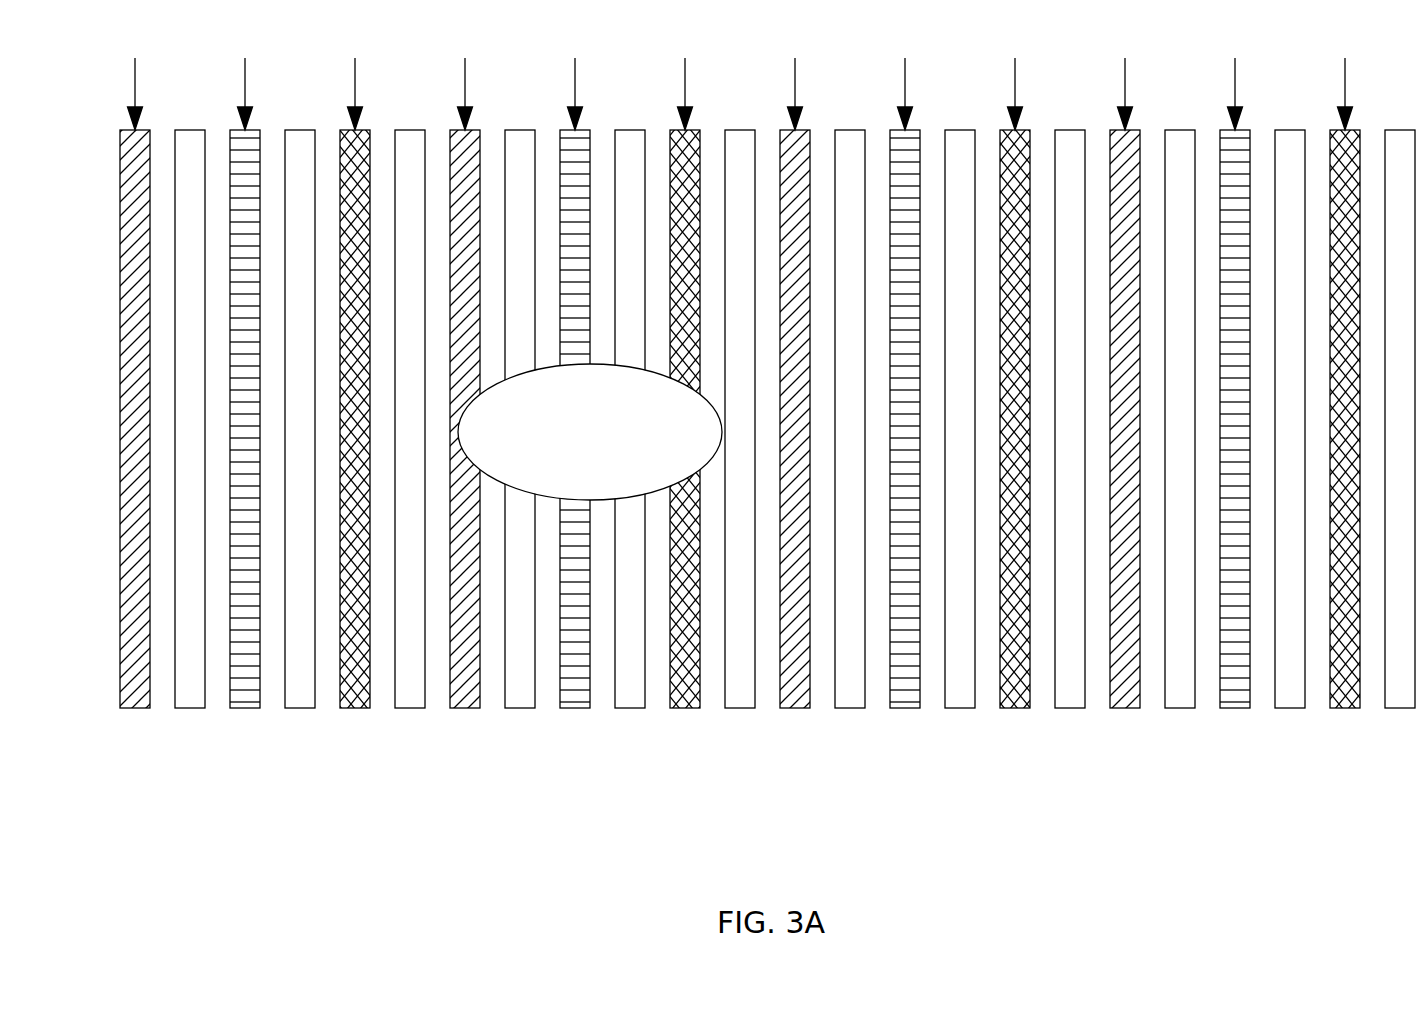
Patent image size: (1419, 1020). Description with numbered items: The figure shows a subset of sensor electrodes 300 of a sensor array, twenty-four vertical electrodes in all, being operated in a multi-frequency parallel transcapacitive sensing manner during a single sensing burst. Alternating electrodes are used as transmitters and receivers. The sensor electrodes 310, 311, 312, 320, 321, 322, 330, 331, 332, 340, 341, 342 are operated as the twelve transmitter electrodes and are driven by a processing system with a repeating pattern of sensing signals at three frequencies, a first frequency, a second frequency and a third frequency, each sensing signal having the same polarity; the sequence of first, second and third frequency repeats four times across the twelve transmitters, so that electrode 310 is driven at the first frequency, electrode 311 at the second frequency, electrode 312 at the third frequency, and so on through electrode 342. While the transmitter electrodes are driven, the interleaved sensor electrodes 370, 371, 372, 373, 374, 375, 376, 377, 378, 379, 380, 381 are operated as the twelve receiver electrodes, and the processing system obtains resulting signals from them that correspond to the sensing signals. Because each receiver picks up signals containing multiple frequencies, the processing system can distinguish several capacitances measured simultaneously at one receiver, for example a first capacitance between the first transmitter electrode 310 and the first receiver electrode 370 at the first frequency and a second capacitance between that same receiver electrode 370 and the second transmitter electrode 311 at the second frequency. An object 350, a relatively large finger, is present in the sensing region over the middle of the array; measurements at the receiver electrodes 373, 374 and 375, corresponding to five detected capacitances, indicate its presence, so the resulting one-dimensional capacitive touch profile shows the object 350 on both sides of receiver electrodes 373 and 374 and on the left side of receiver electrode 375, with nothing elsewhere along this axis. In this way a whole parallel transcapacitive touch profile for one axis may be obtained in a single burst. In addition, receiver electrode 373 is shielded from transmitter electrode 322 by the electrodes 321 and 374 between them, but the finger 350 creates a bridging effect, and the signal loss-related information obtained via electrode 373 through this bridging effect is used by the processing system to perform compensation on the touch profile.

The subset of sensor electrodes 300 is at (769, 467).
The sensor electrode operated as Tx electrode Tx0 310 is at (130, 708).
The sensor electrode operated as Tx electrode Tx1 311 is at (240, 708).
The sensor electrode operated as Tx electrode Tx2 312 is at (350, 708).
The sensor electrode operated as Tx electrode Tx3 320 is at (460, 708).
The sensor electrode operated as Tx electrode Tx4 321 is at (570, 708).
The sensor electrode operated as Tx electrode Tx5 322 is at (680, 708).
The sensor electrode operated as Tx electrode Tx6 330 is at (790, 708).
The sensor electrode operated as Tx electrode Tx7 331 is at (900, 708).
The sensor electrode operated as Tx electrode Tx8 332 is at (1010, 708).
The sensor electrode operated as Tx electrode Tx9 340 is at (1120, 708).
The sensor electrode operated as Tx electrode Tx10 341 is at (1230, 708).
The sensor electrode operated as Tx electrode Tx11 342 is at (1340, 708).
The object 350 is at (590, 432).
The sensor electrode operated as Rx electrode Rx0 370 is at (197, 708).
The sensor electrode operated as Rx electrode Rx1 371 is at (307, 708).
The sensor electrode operated as Rx electrode Rx2 372 is at (417, 708).
The sensor electrode operated as Rx electrode Rx3 373 is at (527, 708).
The sensor electrode operated as Rx electrode Rx4 374 is at (637, 708).
The sensor electrode operated as Rx electrode Rx5 375 is at (747, 708).
The sensor electrode operated as Rx electrode Rx6 376 is at (857, 708).
The sensor electrode operated as Rx electrode Rx7 377 is at (967, 708).
The sensor electrode operated as Rx electrode Rx8 378 is at (1077, 708).
The sensor electrode operated as Rx electrode Rx9 379 is at (1187, 708).
The sensor electrode operated as Rx electrode Rx10 380 is at (1297, 708).
The sensor electrode operated as Rx electrode Rx11 381 is at (1407, 708).